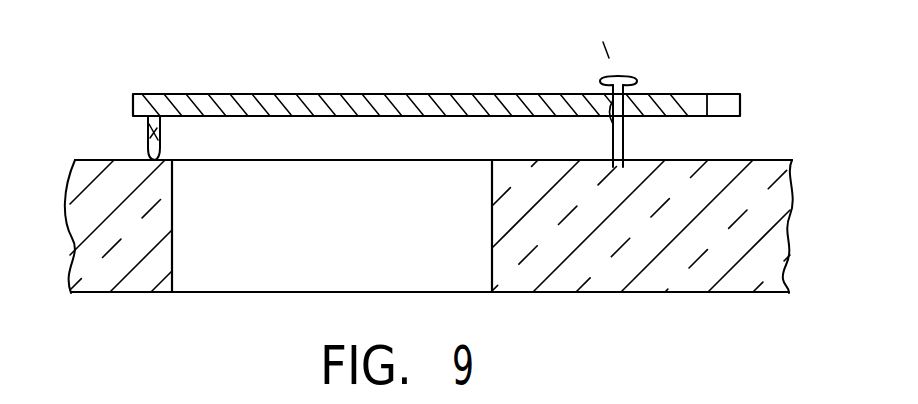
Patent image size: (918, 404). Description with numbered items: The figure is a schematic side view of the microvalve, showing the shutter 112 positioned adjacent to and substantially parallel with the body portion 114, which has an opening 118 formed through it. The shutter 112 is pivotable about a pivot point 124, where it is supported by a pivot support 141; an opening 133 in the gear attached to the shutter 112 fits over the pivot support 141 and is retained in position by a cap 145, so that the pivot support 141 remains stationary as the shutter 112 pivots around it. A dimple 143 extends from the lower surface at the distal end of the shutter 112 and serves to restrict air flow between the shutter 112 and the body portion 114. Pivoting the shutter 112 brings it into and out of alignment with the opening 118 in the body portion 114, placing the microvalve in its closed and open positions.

The shutter 112 is at (210, 95).
The body portion 114 is at (785, 168).
The opening 118 is at (172, 252).
The pivot point 124 is at (610, 62).
The opening 133 is at (613, 120).
The pivot support 141 is at (626, 131).
The dimple 143 is at (147, 146).
The cap 145 is at (617, 77).